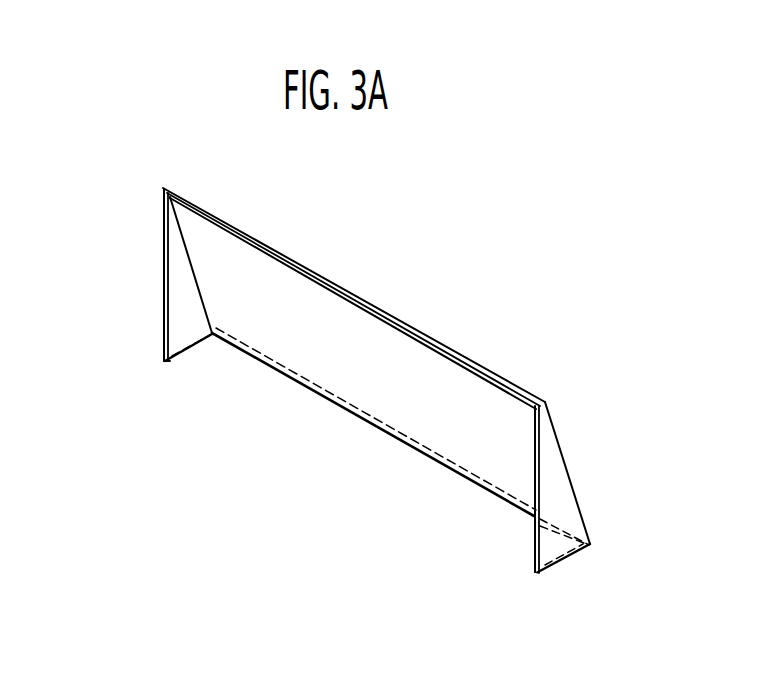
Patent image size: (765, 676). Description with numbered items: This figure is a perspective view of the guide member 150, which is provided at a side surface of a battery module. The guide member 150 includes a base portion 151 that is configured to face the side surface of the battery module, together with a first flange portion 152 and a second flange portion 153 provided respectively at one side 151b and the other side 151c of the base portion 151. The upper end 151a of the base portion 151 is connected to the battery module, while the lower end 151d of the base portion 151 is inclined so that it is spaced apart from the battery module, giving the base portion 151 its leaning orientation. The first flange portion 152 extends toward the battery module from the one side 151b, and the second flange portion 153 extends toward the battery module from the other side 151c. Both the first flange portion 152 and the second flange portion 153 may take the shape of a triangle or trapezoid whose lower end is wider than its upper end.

The guide member 150 is at (416, 236).
The base portion 151 is at (302, 347).
The upper end 151a is at (453, 348).
The one side 151b is at (172, 250).
The other side 151c is at (566, 455).
The lower end 151d is at (362, 425).
The first flange portion 152 is at (177, 312).
The second flange portion 153 is at (557, 508).